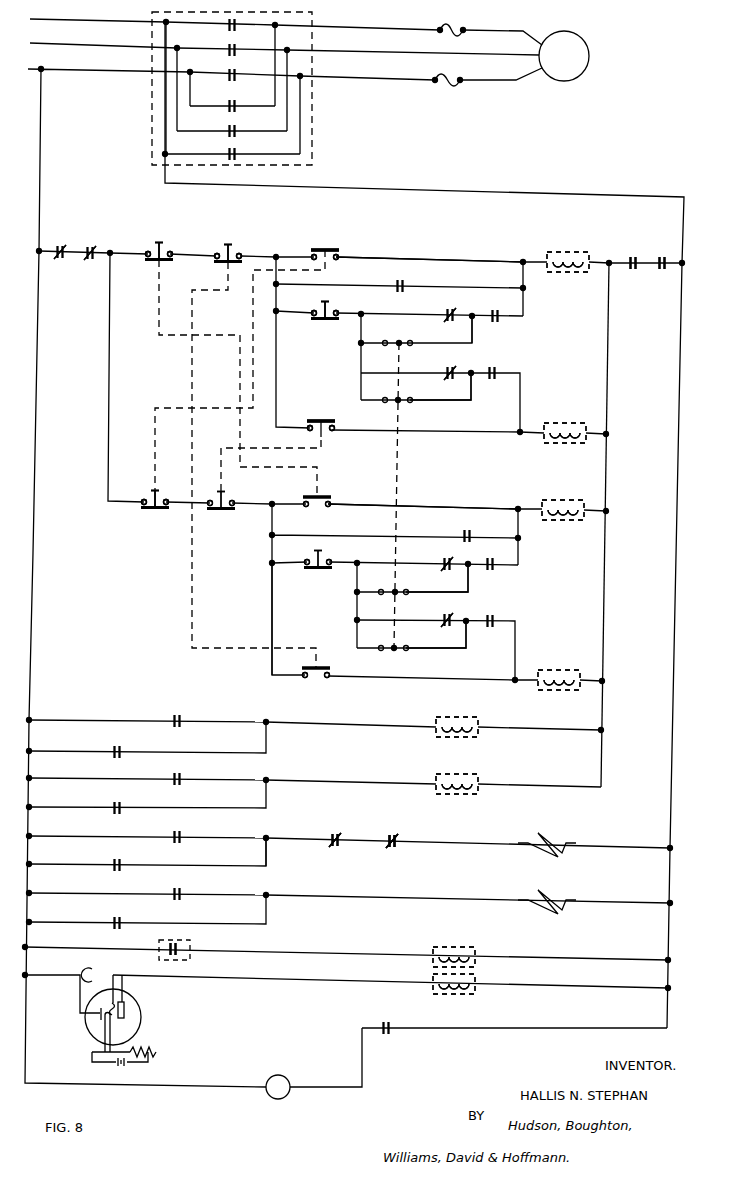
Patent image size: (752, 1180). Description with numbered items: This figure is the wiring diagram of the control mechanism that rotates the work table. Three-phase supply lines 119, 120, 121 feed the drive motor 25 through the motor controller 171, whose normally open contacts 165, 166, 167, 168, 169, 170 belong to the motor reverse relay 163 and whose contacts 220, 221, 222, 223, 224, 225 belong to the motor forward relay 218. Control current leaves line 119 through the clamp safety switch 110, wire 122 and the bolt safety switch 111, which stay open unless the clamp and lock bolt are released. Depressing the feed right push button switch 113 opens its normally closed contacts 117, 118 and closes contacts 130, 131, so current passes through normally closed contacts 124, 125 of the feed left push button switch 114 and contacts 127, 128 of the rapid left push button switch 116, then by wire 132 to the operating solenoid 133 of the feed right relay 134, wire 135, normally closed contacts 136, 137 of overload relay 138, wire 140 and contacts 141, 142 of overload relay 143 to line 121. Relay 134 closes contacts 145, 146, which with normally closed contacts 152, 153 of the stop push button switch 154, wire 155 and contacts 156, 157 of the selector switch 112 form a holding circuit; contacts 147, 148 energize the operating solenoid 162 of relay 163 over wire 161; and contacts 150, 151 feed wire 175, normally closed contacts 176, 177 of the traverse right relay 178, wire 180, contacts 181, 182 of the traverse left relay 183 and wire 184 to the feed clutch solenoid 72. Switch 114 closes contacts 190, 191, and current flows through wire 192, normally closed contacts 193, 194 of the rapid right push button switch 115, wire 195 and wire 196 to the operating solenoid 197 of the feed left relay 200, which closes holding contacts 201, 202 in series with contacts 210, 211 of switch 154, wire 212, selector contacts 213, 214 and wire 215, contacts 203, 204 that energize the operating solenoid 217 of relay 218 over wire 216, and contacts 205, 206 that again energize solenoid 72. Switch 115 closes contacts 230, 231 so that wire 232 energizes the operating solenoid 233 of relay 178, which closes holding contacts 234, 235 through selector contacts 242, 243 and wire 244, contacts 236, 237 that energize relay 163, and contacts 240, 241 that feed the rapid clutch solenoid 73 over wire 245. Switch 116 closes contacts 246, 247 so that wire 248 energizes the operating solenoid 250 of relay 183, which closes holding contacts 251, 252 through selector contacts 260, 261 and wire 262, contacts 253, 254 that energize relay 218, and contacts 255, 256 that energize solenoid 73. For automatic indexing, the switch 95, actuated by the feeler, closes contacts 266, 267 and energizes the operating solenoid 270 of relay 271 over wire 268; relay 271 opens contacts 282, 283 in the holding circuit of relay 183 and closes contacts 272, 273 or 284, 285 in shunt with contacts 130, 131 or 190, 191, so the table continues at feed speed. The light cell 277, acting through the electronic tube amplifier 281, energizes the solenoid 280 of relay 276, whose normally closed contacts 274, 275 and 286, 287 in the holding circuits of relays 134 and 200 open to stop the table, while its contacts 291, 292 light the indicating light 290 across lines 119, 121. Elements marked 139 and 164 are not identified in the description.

The motor 25 is at (584, 73).
The feed clutch solenoid 72 is at (552, 840).
The rapid clutch solenoid 73 is at (552, 897).
The switch 95 is at (190, 945).
The clamp safety switch 110 is at (60, 259).
The bolt safety switch 111 is at (93, 260).
The selection switch 112 is at (399, 468).
The feed right push button switch 113 is at (332, 249).
The feed left push button switch 114 is at (157, 243).
The rapid right push button switch 115 is at (338, 411).
The rapid left push button switch 116 is at (231, 247).
The normally closed contact 117 is at (144, 499).
The normally closed contact 118 is at (166, 502).
The line 119 is at (112, 70).
The line 120 is at (112, 44).
The line 121 is at (112, 20).
The wire 122 is at (89, 247).
The normally closed contact 124 is at (148, 252).
The normally closed contact 125 is at (172, 255).
The normally closed contact 127 is at (214, 253).
The normally closed contact 128 is at (241, 256).
The normally open contact 130 is at (314, 254).
The normally open contact 131 is at (338, 256).
The wire 132 is at (470, 258).
The operating solenoid 133 is at (556, 273).
The feed right relay 134 is at (575, 252).
The wire 135 is at (607, 350).
The normally closed contact 136 is at (630, 260).
The normally closed contact 137 is at (632, 250).
The overload relay 138 is at (450, 86).
The contact 139 is at (634, 270).
The wire 140 is at (660, 270).
The normally closed contact 141 is at (660, 252).
The normally closed contact 142 is at (672, 258).
The overload relay 143 is at (455, 27).
The normally open contact 145 is at (492, 313).
The normally open contact 146 is at (496, 320).
The normally open contact 147 is at (172, 779).
The normally open contact 148 is at (181, 780).
The normally open contact 150 is at (472, 343).
The normally open contact 151 is at (120, 865).
The normally closed contact 152 is at (314, 310).
The normally closed contact 153 is at (336, 311).
The stop push button switch 154 is at (321, 304).
The wire 155 is at (361, 353).
The contact 156 is at (385, 341).
The contact 157 is at (410, 342).
The wire 161 is at (292, 785).
The operating solenoid 162 is at (462, 796).
The motor reverse relay 163 is at (447, 372).
The contact 164 is at (452, 379).
The normally open contact 165 is at (228, 160).
The normally open contact 166 is at (238, 158).
The normally open contact 167 is at (229, 134).
The normally open contact 168 is at (238, 135).
The normally open contact 169 is at (229, 109).
The normally open contact 170 is at (238, 110).
The motor controller 171 is at (152, 123).
The wire 175 is at (266, 860).
The normally closed contact 176 is at (330, 840).
The normally closed contact 177 is at (338, 837).
The rapid right relay 178 is at (578, 418).
The wire 180 is at (349, 845).
The normally closed contact 181 is at (388, 840).
The normally closed contact 182 is at (397, 841).
The rapid left relay 183 is at (568, 673).
The wire 184 is at (452, 846).
The normally open contact 190 is at (306, 508).
The normally open contact 191 is at (329, 508).
The wire 192 is at (180, 510).
The normally closed contact 193 is at (210, 501).
The normally closed contact 194 is at (233, 503).
The wire 195 is at (272, 584).
The wire 196 is at (465, 507).
The operating solenoid 197 is at (560, 520).
The feed left relay 200 is at (578, 494).
The normally open contact 201 is at (490, 562).
The normally open contact 202 is at (495, 570).
The normally open contact 203 is at (172, 721).
The normally open contact 204 is at (181, 722).
The normally open contact 205 is at (172, 837).
The normally open contact 206 is at (181, 838).
The normally closed contact 210 is at (307, 560).
The normally closed contact 211 is at (329, 562).
The wire 212 is at (357, 604).
The contact 213 is at (385, 585).
The contact 214 is at (420, 586).
The wire 215 is at (468, 598).
The wire 216 is at (290, 728).
The operating solenoid 217 is at (465, 738).
The motor forward relay 218 is at (437, 734).
The normally open contact 220 is at (229, 79).
The normally open contact 221 is at (238, 78).
The normally open contact 222 is at (229, 52).
The normally open contact 223 is at (238, 53).
The normally open contact 224 is at (229, 27).
The normally open contact 225 is at (238, 28).
The normally open contact 230 is at (310, 432).
The normally open contact 231 is at (333, 432).
The wire 232 is at (478, 434).
The operating solenoid 233 is at (556, 443).
The normally open contact 234 is at (490, 370).
The normally open contact 235 is at (495, 379).
The normally open contact 236 is at (112, 808).
The normally open contact 237 is at (120, 808).
The normally open contact 240 is at (172, 894).
The normally open contact 241 is at (181, 895).
The contact 242 is at (384, 403).
The contact 243 is at (410, 403).
The wire 244 is at (471, 405).
The wire 245 is at (302, 898).
The normally open contact 246 is at (303, 679).
The normally open contact 247 is at (328, 679).
The wire 248 is at (455, 683).
The operating solenoid 250 is at (550, 690).
The normally open contact 251 is at (486, 622).
The normally open contact 252 is at (494, 622).
The normally open contact 253 is at (112, 752).
The normally open contact 254 is at (120, 752).
The normally open contact 255 is at (112, 923).
The normally open contact 256 is at (120, 923).
The contact 260 is at (380, 651).
The contact 261 is at (406, 652).
The wire 262 is at (466, 652).
The normally open contact 266 is at (165, 946).
The normally open contact 267 is at (178, 955).
The wire 268 is at (350, 952).
The operating solenoid 270 is at (455, 947).
The relay 271 is at (475, 955).
The normally open contact 272 is at (397, 288).
The normally open contact 273 is at (404, 284).
The normally closed contact 274 is at (447, 314).
The normally closed contact 275 is at (452, 313).
The relay 276 is at (475, 984).
The light cell 277 is at (90, 969).
The solenoid 280 is at (455, 994).
The electronic tube amplifier 281 is at (134, 1026).
The normally closed contact 282 is at (444, 620).
The normally closed contact 283 is at (452, 627).
The normally open contact 284 is at (463, 535).
The normally open contact 285 is at (472, 536).
The normally closed contact 286 is at (444, 564).
The normally closed contact 287 is at (452, 570).
The indicating light 290 is at (292, 1087).
The normally open contact 291 is at (382, 1025).
The normally open contact 292 is at (390, 1032).